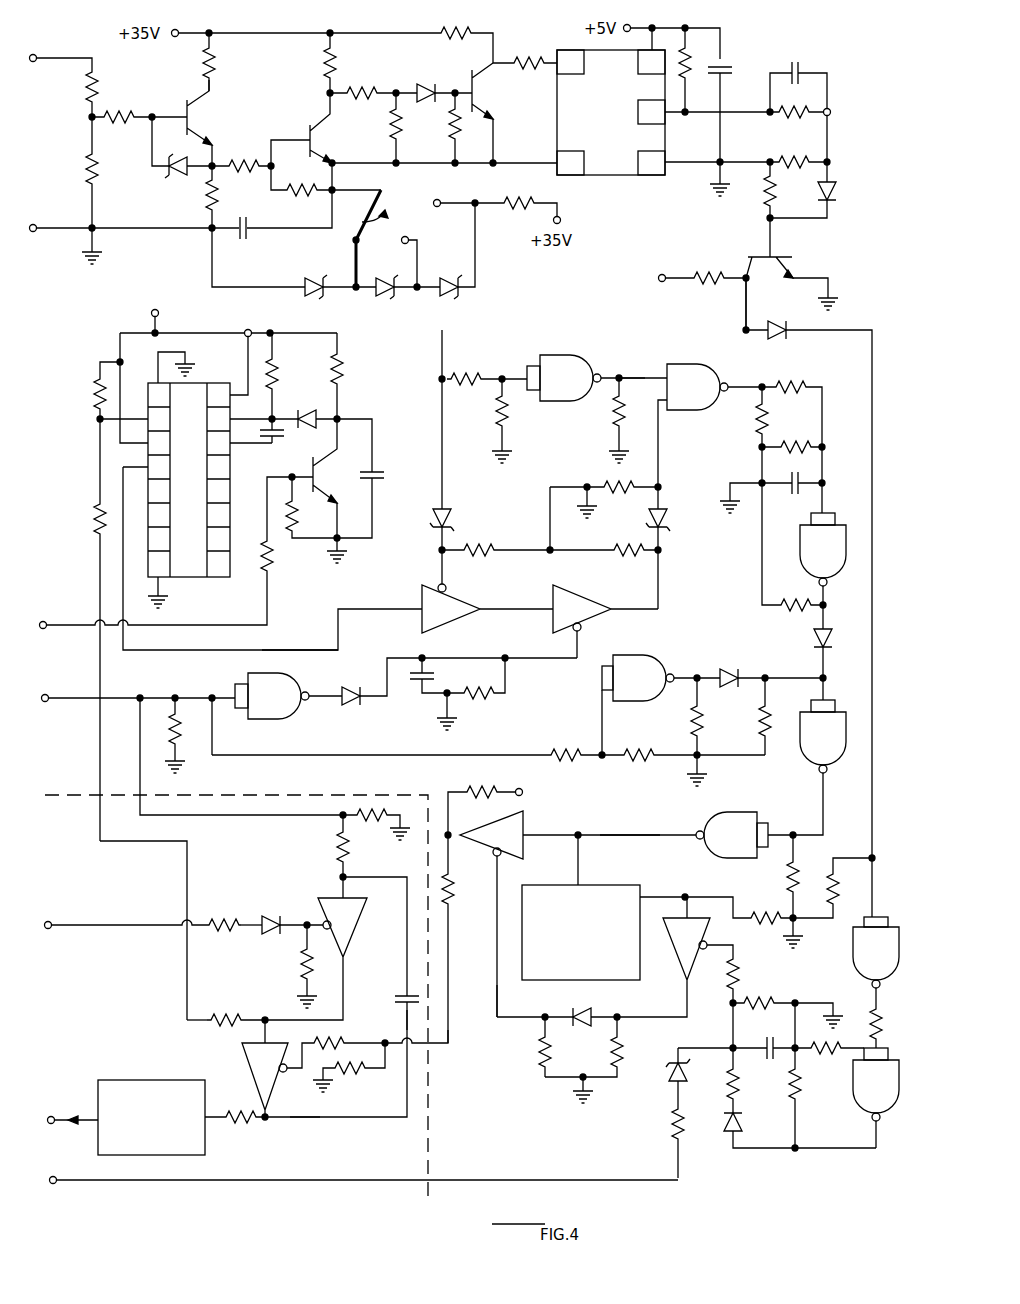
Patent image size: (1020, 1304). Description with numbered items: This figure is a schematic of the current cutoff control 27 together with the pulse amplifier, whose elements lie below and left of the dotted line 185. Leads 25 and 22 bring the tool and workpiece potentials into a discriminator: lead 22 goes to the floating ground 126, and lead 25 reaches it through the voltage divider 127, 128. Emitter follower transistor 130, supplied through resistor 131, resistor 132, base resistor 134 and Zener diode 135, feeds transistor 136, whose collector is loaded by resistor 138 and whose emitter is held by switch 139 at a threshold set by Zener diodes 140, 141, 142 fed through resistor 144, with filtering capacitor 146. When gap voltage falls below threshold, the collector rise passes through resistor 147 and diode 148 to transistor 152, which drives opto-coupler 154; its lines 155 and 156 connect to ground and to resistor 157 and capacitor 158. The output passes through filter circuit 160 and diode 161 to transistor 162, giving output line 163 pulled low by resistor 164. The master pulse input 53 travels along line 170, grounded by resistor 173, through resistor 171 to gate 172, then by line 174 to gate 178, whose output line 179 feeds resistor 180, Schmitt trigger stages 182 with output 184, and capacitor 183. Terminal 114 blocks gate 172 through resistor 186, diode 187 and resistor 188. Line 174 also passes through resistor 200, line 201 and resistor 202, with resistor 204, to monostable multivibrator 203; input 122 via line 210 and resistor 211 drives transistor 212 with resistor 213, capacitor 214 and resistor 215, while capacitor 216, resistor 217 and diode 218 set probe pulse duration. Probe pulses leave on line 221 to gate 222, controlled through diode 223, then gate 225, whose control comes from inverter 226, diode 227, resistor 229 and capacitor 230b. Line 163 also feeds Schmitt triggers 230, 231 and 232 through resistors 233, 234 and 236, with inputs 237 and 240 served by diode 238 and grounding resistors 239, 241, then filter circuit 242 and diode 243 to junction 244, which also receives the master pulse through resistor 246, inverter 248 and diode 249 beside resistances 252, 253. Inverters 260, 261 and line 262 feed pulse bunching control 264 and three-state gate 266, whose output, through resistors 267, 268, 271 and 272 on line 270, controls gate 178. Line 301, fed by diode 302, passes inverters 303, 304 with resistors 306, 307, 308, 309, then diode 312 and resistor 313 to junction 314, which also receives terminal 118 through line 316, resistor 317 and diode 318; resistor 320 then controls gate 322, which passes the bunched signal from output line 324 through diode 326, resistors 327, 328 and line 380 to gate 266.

The lead 22 is at (37, 224).
The lead 25 is at (37, 54).
The current cutoff control 27 is at (118, 300).
The master pulse input 53 is at (49, 694).
The terminal 114 is at (52, 928).
The terminal 118 is at (54, 1176).
The input 122 is at (44, 621).
The floating ground 126 is at (104, 258).
The voltage divider resistor 127 is at (88, 93).
The voltage divider resistor 128 is at (88, 172).
The transistor 130 is at (195, 117).
The resistor 131 is at (216, 72).
The resistor 132 is at (219, 195).
The resistor 134 is at (135, 112).
The Zener diode 135 is at (181, 178).
The transistor 136 is at (322, 142).
The load resistor 138 is at (327, 66).
The voltage level selector switch 139 is at (380, 212).
The Zener diode 140 is at (305, 292).
The Zener diode 141 is at (378, 294).
The Zener diode 142 is at (443, 294).
The resistor 144 is at (521, 210).
The filtering capacitor 146 is at (250, 238).
The resistor 147 is at (366, 88).
The diode 148 is at (431, 85).
The transistor 152 is at (479, 95).
The opto-coupler 154 is at (648, 181).
The output line 155 is at (700, 170).
The output line 156 is at (713, 118).
The resistor 157 is at (692, 45).
The capacitor 158 is at (730, 68).
The filter circuit 160 is at (805, 130).
The diode 161 is at (845, 190).
The transistor 162 is at (766, 228).
The output line 163 is at (744, 310).
The resistor 164 is at (712, 272).
The line 170 is at (192, 694).
The resistor 171 is at (338, 862).
The gate 172 is at (352, 928).
The resistor 173 is at (370, 808).
The line 174 is at (400, 1020).
The gate 178 is at (255, 1058).
The output line 179 is at (306, 1119).
The resistor 180 is at (236, 1122).
The Schmitt trigger stages 182 is at (155, 1080).
The capacitor 183 is at (402, 995).
The output 184 is at (54, 1116).
The dotted line 185 is at (78, 800).
The resistor 186 is at (222, 920).
The diode 187 is at (272, 917).
The resistor 188 is at (303, 965).
The resistor 200 is at (228, 1015).
The line 201 is at (184, 884).
The resistor 202 is at (95, 525).
The monostable multivibrator 203 is at (200, 380).
The resistor 204 is at (95, 398).
The line 210 is at (200, 625).
The resistor 211 is at (276, 563).
The transistor 212 is at (318, 468).
The resistor 213 is at (298, 515).
The capacitor 214 is at (381, 478).
The resistor 215 is at (345, 378).
The capacitor 216 is at (272, 443).
The resistor 217 is at (281, 380).
The diode 218 is at (309, 408).
The line 221 is at (262, 650).
The gate 222 is at (465, 612).
The diode 223 is at (453, 518).
The gate 225 is at (583, 620).
The inverter 226 is at (278, 712).
The diode 227 is at (354, 686).
The resistor 229 is at (482, 698).
The Schmitt trigger 230 is at (580, 372).
The capacitor 230b is at (436, 676).
The Schmitt trigger 231 is at (700, 378).
The Schmitt trigger 232 is at (800, 565).
The resistor 233 is at (472, 375).
The resistor 234 is at (510, 420).
The resistor 236 is at (612, 425).
The input 237 is at (640, 374).
The diode 238 is at (668, 530).
The grounding resistor 239 is at (640, 556).
The input 240 is at (660, 425).
The grounding resistor 241 is at (612, 482).
The filter circuit 242 is at (798, 376).
The diode 243 is at (812, 638).
The junction 244 is at (822, 676).
The resistor 246 is at (555, 750).
The Schmitt trigger inverter 248 is at (663, 665).
The diode 249 is at (730, 666).
The resistance 252 is at (692, 722).
The resistance 253 is at (762, 722).
The inverter 260 is at (815, 756).
The inverter 261 is at (740, 822).
The line 262 is at (632, 835).
The pulse bunching control 264 is at (600, 885).
The three-state gate 266 is at (535, 836).
The resistor 267 is at (470, 790).
The resistor 268 is at (455, 905).
The line 270 is at (452, 1050).
The resistor 271 is at (350, 1075).
The resistor 272 is at (335, 1040).
The line 301 is at (866, 326).
The diode 302 is at (780, 284).
The inverter 303 is at (865, 965).
The inverter 304 is at (870, 1112).
The resistor 306 is at (842, 890).
The resistor 307 is at (827, 1052).
The resistor 308 is at (800, 1097).
The resistor 309 is at (884, 1022).
The diode 312 is at (733, 1133).
The resistor 313 is at (740, 1082).
The junction 314 is at (732, 1046).
The line 316 is at (500, 1178).
The resistor 317 is at (670, 1130).
The diode 318 is at (668, 1090).
The resistor 320 is at (740, 980).
The gate 322 is at (684, 955).
The output line 324 is at (686, 896).
The diode 326 is at (590, 1010).
The resistor 327 is at (624, 1048).
The resistor 328 is at (540, 1050).
The line 380 is at (505, 995).